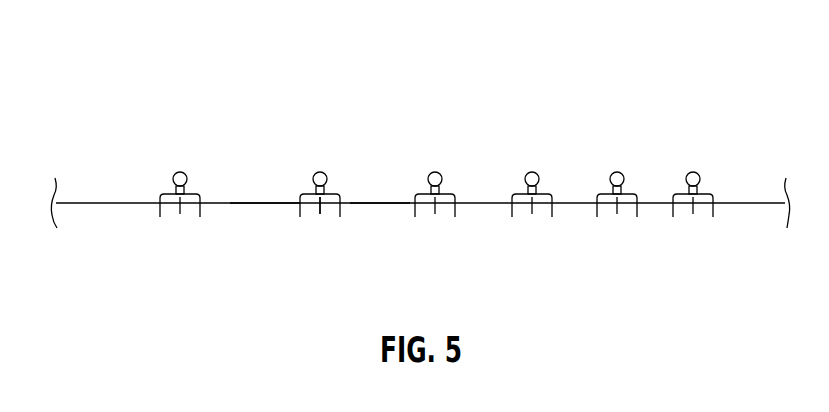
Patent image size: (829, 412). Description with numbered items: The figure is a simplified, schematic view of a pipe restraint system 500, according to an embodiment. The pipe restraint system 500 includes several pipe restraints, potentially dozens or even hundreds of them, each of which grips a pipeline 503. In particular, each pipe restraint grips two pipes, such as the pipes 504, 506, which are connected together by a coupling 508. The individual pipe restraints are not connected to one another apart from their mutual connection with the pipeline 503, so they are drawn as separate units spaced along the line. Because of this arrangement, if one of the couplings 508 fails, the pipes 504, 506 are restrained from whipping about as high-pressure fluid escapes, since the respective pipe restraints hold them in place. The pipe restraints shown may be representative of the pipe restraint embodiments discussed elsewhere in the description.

The pipe restraint system 500 is at (121, 44).
The pipeline 503 is at (97, 203).
The pipe 504 is at (252, 203).
The pipe 506 is at (373, 203).
The coupling 508 is at (321, 212).